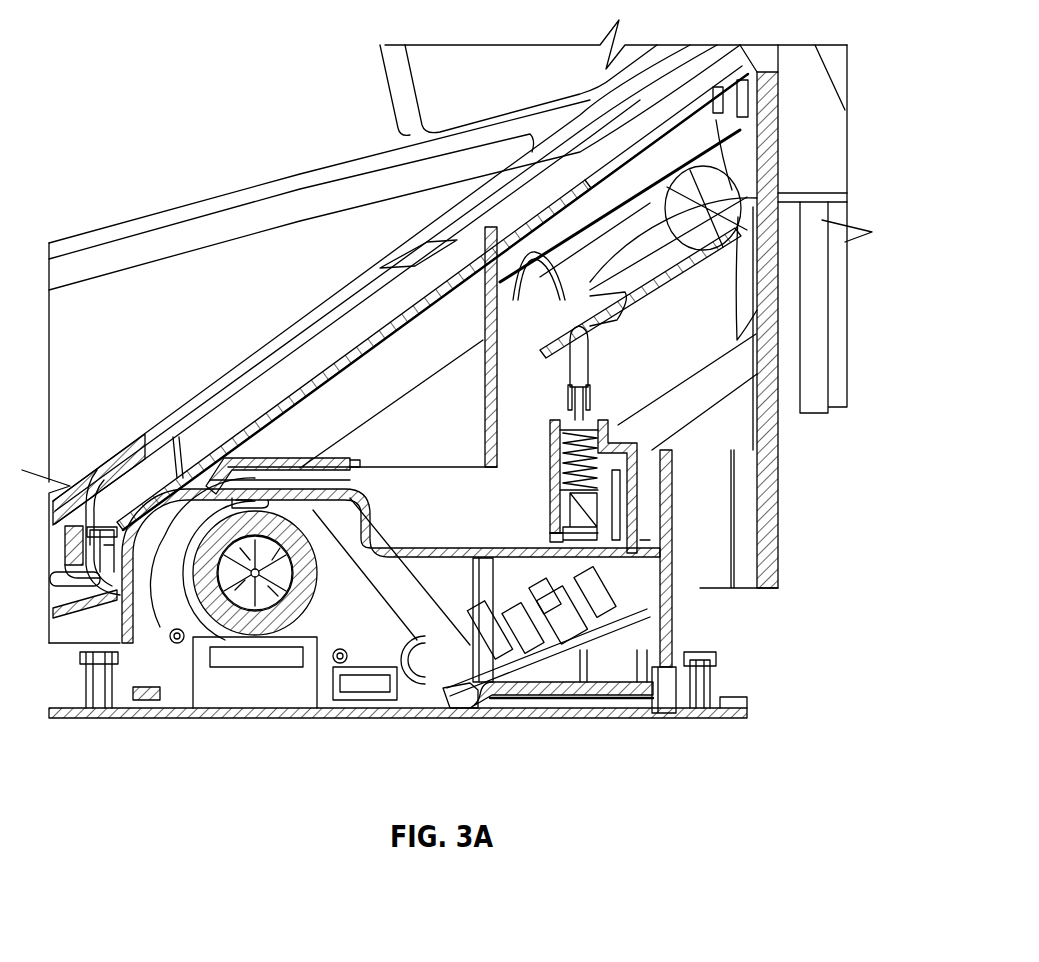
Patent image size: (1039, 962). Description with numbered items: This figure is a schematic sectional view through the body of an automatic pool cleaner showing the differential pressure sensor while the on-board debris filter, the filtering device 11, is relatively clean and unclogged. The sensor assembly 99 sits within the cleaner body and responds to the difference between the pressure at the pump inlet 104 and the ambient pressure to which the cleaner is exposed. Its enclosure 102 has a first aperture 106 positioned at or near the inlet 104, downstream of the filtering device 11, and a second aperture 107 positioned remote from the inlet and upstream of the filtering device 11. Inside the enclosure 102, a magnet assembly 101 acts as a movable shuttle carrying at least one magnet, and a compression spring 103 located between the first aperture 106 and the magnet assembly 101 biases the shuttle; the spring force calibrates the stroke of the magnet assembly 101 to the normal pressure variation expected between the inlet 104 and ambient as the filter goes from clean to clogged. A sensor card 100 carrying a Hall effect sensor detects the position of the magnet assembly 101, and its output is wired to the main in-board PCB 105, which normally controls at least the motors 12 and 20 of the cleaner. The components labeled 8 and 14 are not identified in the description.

The vehicle door assembly 8 is at (157, 126).
The filtering device 11 is at (398, 68).
The motor 12 is at (428, 598).
The door frame 14 is at (807, 317).
The motor 20 is at (236, 600).
The sensor assembly 99 is at (836, 537).
The sensor card 100 is at (614, 481).
The magnet assembly 101 is at (583, 544).
The enclosure 102 is at (551, 460).
The spring 103 is at (595, 425).
The inlet 104 is at (654, 226).
The main in-board PCB 105 is at (543, 664).
The first aperture 106 is at (778, 192).
The second aperture 107 is at (556, 534).